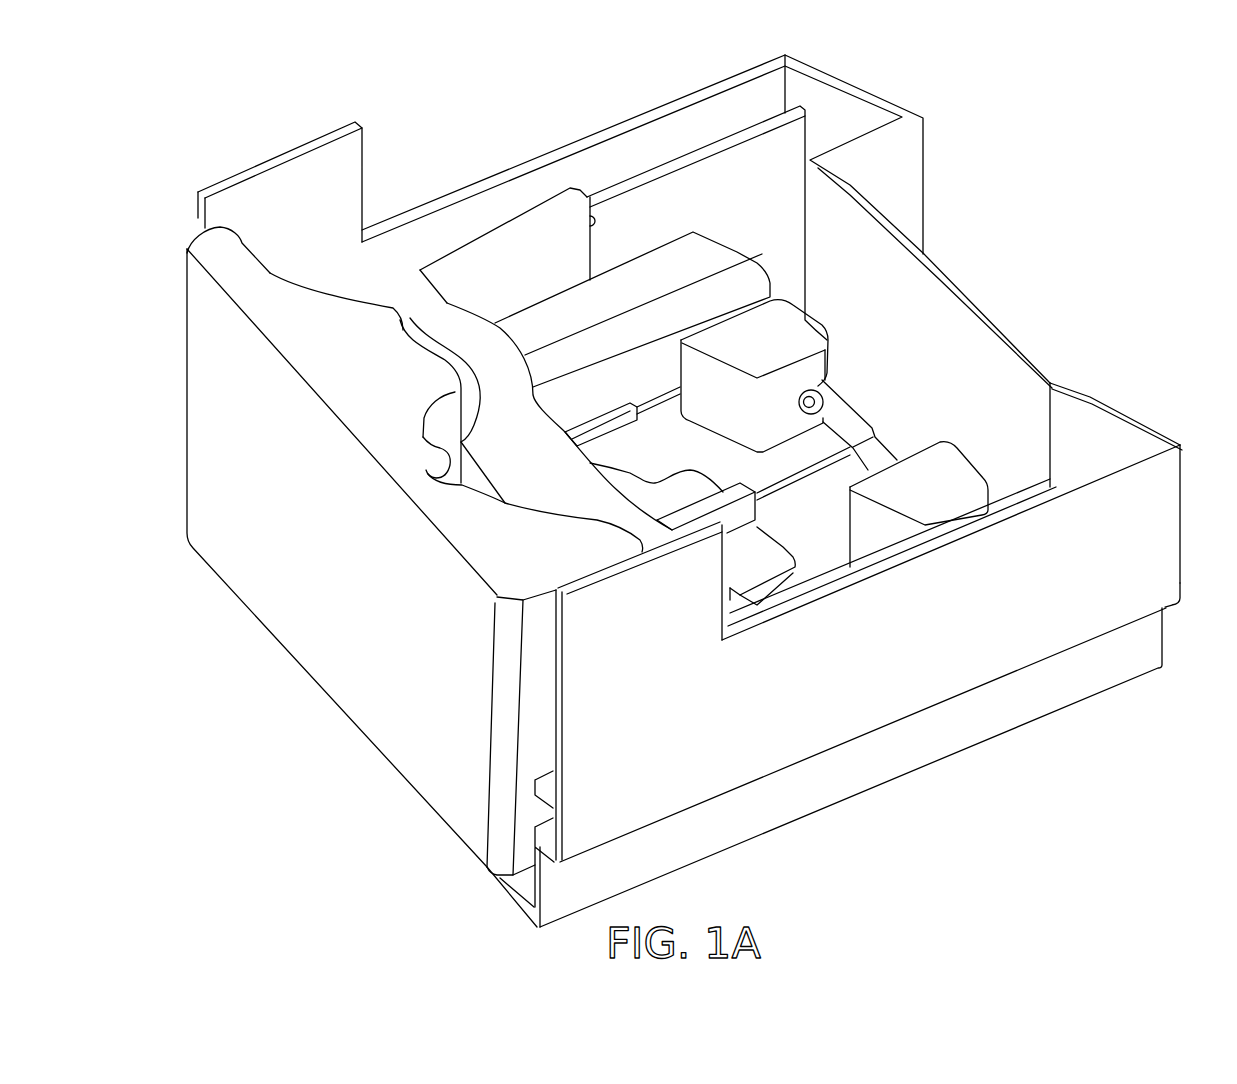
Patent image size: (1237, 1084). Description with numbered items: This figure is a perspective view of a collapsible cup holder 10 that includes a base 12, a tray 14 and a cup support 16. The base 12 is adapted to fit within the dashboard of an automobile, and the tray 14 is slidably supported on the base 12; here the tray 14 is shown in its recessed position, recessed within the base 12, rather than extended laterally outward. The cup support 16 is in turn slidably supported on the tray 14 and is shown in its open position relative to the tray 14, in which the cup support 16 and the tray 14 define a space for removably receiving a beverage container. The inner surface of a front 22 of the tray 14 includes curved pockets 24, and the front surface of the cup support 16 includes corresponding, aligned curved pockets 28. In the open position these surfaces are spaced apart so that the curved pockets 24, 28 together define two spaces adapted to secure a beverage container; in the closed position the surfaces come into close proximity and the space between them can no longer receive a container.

The collapsible cup holder 10 is at (704, 484).
The base 12 is at (1140, 540).
The tray 14 is at (758, 165).
The cup support 16 is at (489, 226).
The front 22 is at (320, 613).
The curved pockets 24 is at (270, 271).
The curved pockets 28 is at (400, 320).